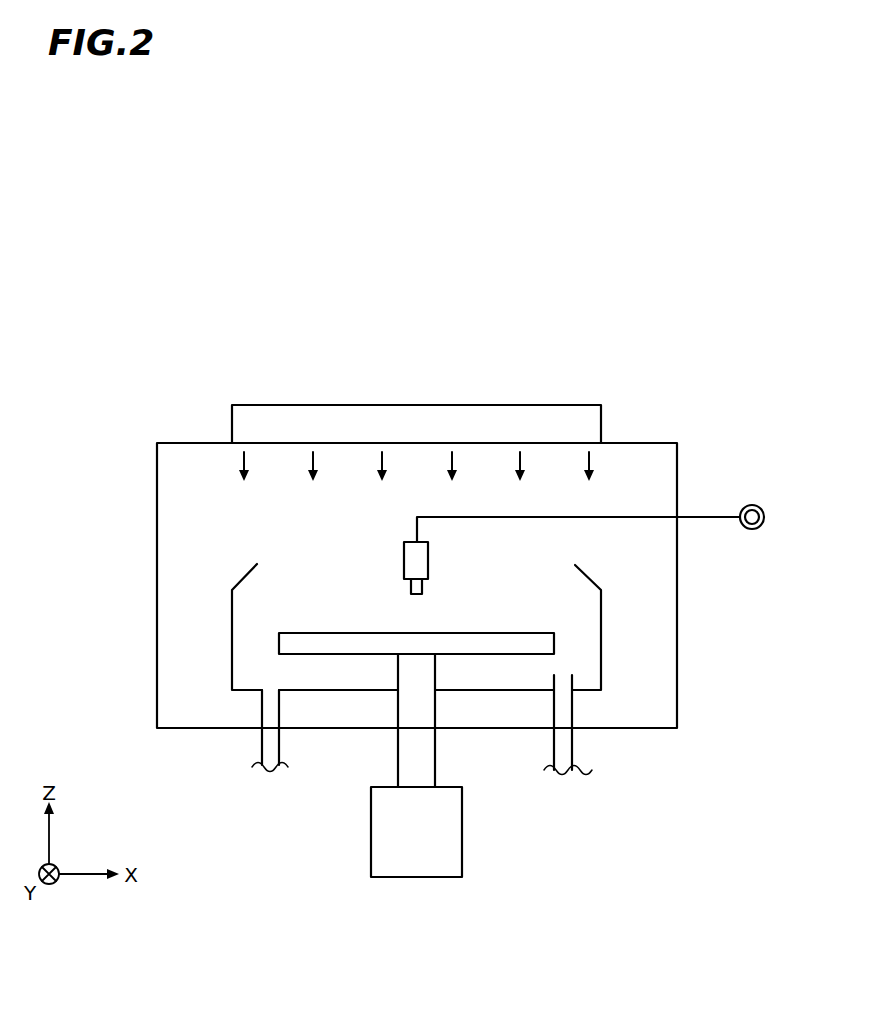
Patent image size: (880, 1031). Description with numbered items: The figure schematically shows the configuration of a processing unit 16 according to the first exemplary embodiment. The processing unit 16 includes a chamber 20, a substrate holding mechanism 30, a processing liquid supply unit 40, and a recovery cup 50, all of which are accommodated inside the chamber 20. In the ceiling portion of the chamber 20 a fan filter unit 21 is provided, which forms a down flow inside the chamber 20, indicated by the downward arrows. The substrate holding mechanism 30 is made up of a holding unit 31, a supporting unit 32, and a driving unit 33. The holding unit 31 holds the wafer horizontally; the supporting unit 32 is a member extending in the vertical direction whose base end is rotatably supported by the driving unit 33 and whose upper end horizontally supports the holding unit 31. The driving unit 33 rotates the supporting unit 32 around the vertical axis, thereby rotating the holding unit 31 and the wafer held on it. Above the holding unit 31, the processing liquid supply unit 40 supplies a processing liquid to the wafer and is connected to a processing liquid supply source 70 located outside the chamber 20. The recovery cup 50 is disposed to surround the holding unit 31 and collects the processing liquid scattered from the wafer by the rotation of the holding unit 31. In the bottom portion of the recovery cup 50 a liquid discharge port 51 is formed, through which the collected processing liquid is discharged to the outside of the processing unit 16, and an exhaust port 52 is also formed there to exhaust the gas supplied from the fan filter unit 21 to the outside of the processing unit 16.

The processing unit 16 is at (130, 402).
The chamber 20 is at (157, 548).
The fan filter unit 21 is at (405, 405).
The substrate holding mechanism 30 is at (326, 603).
The holding unit 31 is at (373, 633).
The supporting unit 32 is at (398, 745).
The driving unit 33 is at (371, 827).
The processing liquid supply unit 40 is at (393, 532).
The recovery cup 50 is at (608, 563).
The liquid discharge port 51 is at (262, 745).
The exhaust port 52 is at (572, 745).
The processing liquid supply source 70 is at (752, 505).